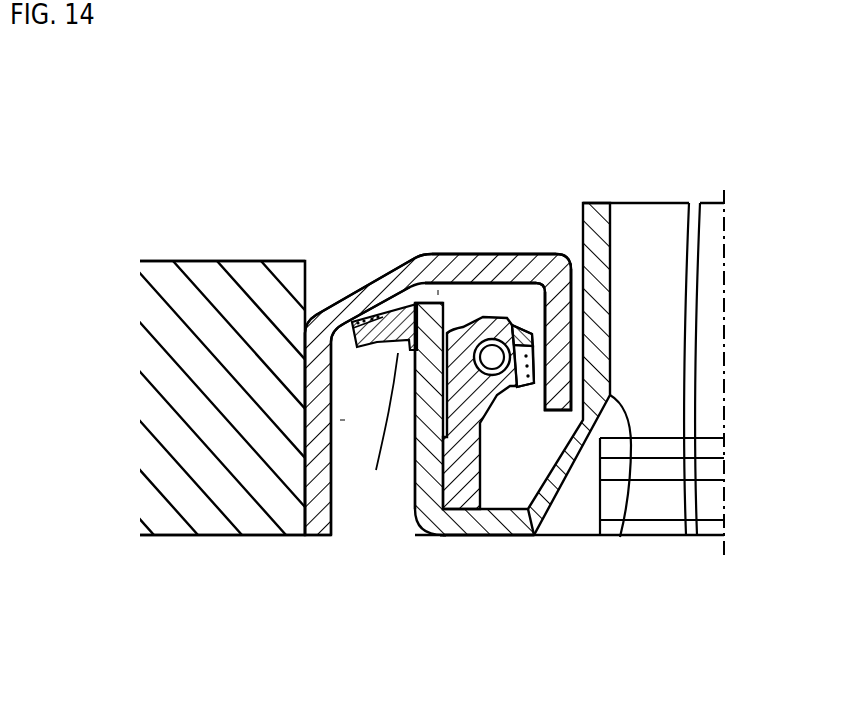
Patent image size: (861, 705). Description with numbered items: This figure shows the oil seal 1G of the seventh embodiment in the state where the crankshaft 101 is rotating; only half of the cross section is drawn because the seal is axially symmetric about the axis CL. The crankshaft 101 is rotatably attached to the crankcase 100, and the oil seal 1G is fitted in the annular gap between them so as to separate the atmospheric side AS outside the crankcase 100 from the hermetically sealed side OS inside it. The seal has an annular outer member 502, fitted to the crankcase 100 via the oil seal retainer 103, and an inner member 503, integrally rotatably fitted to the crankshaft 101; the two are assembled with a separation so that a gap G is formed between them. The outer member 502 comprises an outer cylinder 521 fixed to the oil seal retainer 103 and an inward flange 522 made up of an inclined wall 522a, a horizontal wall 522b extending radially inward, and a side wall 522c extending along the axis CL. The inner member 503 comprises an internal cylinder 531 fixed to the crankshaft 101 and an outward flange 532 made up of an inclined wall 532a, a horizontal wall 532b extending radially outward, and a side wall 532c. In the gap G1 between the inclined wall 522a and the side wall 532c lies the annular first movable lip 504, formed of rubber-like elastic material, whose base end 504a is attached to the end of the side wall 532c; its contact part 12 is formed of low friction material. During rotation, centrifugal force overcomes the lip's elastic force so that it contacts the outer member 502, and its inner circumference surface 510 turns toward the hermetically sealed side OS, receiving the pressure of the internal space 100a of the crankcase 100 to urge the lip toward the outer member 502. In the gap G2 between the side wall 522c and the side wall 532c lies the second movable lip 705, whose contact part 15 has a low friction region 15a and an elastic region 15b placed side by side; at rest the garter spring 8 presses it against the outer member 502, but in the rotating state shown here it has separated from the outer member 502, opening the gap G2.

The oil seal 1G is at (429, 134).
The crankcase 100 is at (180, 262).
The internal space 100a is at (265, 681).
The oil seal retainer 103 is at (248, 280).
The crankshaft 101 is at (652, 258).
The contact part 12 is at (367, 317).
The garter spring 8 is at (503, 390).
The contact part 15 is at (609, 316).
The low friction region 15a is at (532, 378).
The elastic region 15b is at (532, 345).
The second movable lip 705 is at (524, 327).
The outer member 502 is at (408, 354).
The outer cylinder 521 is at (312, 372).
The inward flange 522 is at (434, 253).
The inclined wall 522a is at (375, 275).
The horizontal wall 522b is at (496, 256).
The side wall 522c is at (573, 290).
The inner member 503 is at (489, 436).
The internal cylinder 531 is at (616, 538).
The outward flange 532 is at (509, 540).
The inclined wall 532a is at (584, 478).
The horizontal wall 532b is at (469, 538).
The side wall 532c is at (413, 455).
The first movable lip 504 is at (303, 498).
The base end 504a is at (415, 311).
The inner circumference surface 510 is at (331, 538).
The gap G is at (440, 292).
The gap G1 is at (360, 349).
The gap G2 is at (432, 538).
The atmospheric side AS is at (526, 86).
The hermetically sealed side OS is at (498, 688).
The axis CL is at (725, 375).